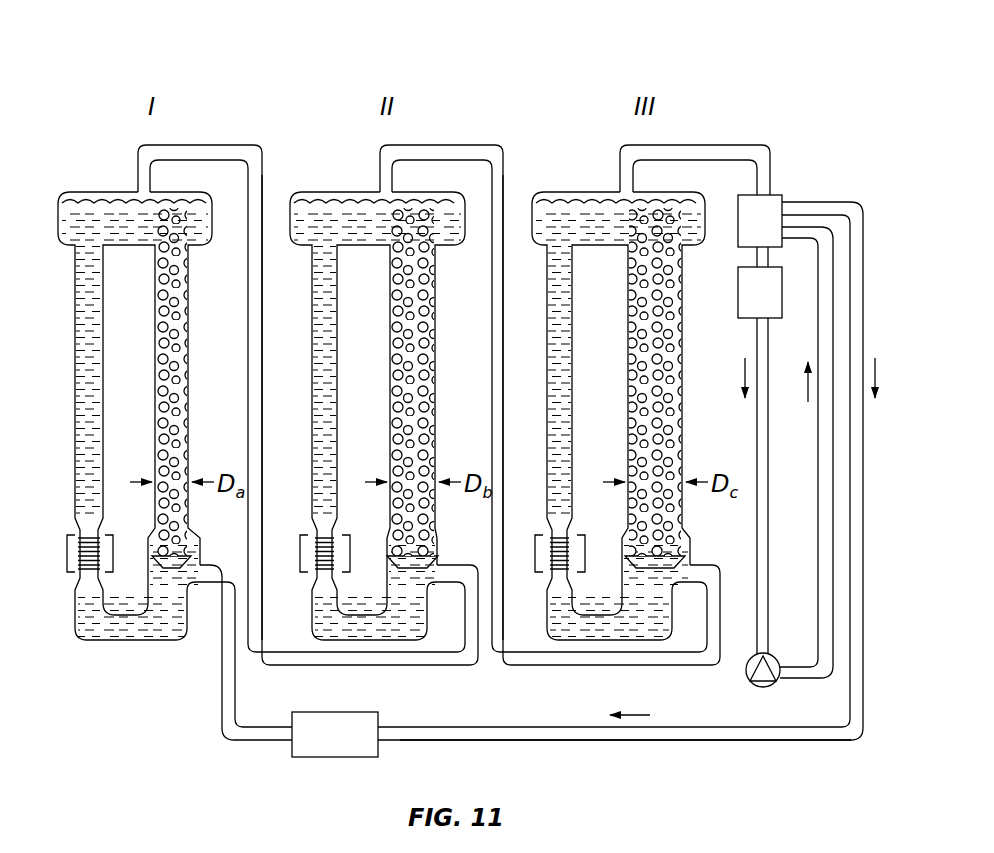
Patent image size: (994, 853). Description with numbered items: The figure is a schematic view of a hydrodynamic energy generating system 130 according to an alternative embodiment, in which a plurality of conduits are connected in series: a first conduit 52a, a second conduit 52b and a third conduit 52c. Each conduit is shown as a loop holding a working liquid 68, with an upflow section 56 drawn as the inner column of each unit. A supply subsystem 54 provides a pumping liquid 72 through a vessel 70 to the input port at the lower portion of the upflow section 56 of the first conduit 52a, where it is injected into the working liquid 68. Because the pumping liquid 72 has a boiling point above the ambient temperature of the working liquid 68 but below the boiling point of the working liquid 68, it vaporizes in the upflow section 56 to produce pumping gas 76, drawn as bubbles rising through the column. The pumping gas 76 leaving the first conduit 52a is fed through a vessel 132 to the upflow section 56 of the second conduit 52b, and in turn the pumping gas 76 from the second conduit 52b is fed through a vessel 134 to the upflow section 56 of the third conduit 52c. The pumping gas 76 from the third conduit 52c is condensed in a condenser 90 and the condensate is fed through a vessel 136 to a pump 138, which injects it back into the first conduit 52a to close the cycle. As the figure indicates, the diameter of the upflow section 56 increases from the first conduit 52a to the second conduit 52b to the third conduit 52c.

The hydrodynamic energy generating system 130 is at (500, 62).
The first conduit 52a is at (73, 188).
The second conduit 52b is at (315, 188).
The third conduit 52c is at (558, 188).
The working liquid 68 is at (90, 365).
The upflow section 56 is at (190, 398).
The pumping gas 76 is at (245, 147).
The vessel 132 is at (262, 305).
The vessel 134 is at (503, 305).
The condenser 90 is at (747, 195).
The pumping liquid 72 is at (815, 202).
The vessel 70 is at (224, 710).
The vessel 136 is at (773, 741).
The pump 138 is at (336, 758).
The supply subsystem 54 is at (708, 783).